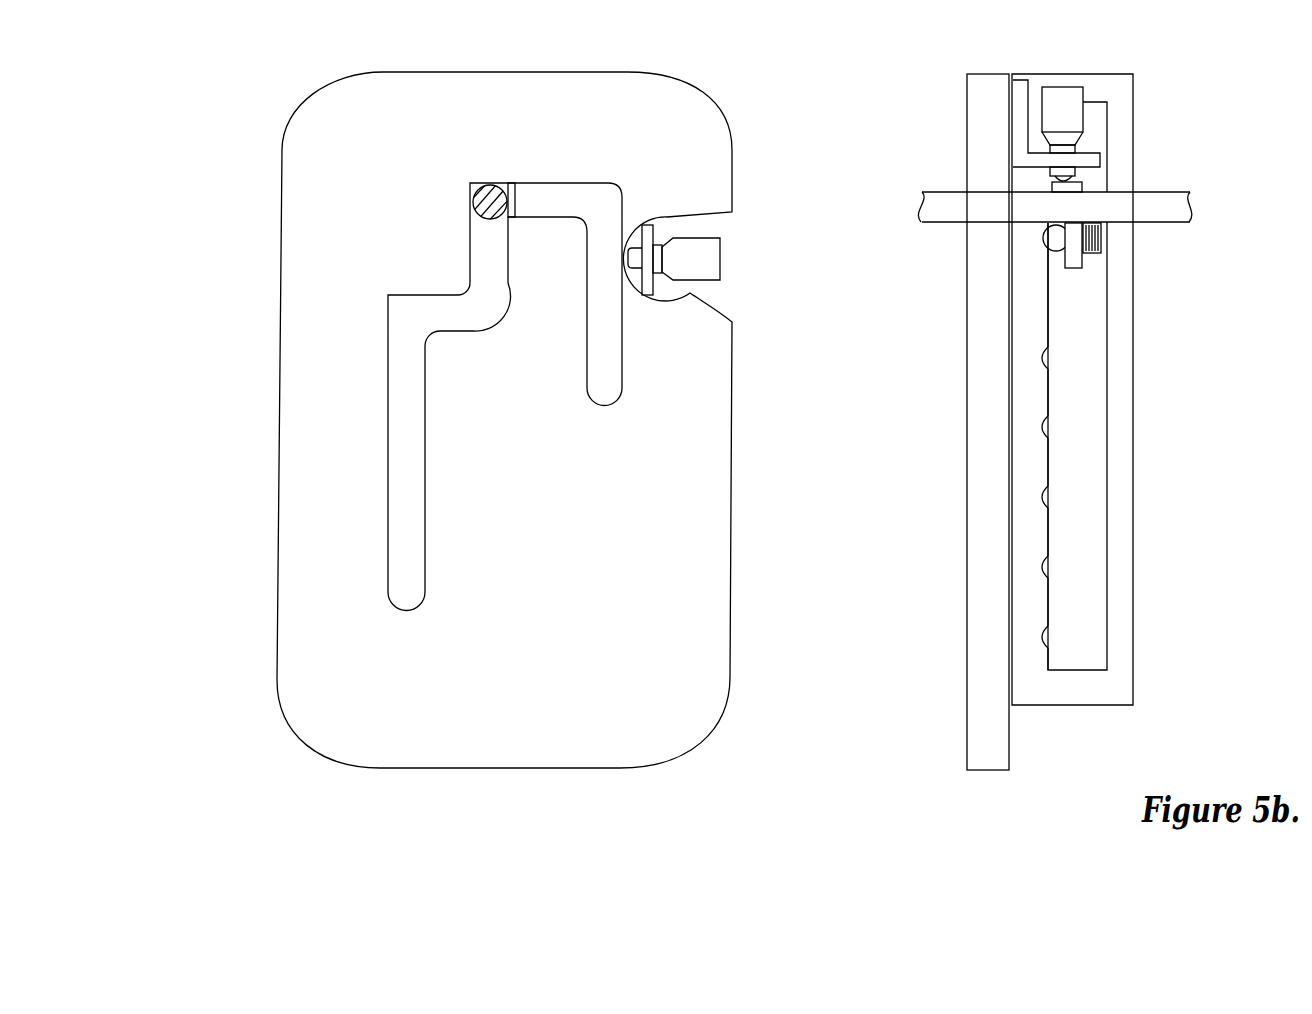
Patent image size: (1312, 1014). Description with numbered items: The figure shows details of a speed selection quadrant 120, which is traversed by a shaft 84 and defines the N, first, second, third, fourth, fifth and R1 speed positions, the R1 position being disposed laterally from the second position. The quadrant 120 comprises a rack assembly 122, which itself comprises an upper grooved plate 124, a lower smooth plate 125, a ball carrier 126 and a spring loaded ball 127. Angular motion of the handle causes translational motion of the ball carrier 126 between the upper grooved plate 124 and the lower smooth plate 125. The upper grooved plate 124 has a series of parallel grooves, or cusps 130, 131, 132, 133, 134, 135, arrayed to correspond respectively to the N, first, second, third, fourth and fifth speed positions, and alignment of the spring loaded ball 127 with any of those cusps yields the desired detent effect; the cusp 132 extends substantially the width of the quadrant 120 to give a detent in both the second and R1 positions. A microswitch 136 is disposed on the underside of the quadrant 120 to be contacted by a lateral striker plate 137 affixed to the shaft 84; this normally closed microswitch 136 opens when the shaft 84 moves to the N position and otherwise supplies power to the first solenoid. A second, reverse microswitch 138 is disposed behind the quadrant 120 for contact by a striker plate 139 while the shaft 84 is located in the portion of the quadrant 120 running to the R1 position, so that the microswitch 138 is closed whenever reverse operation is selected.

The speed selection quadrant 120 is at (322, 656).
The shaft 84 is at (470, 218).
The striker plate 139 is at (522, 188).
The reverse microswitch 138 is at (724, 265).
The rack assembly 122 is at (1133, 696).
The lower smooth plate 125 is at (1118, 600).
The upper grooved plate 124 is at (1031, 393).
The cusp 131 is at (1041, 358).
The cusp 132 is at (1041, 428).
The cusp 133 is at (1041, 497).
The cusp 134 is at (1041, 568).
The cusp 135 is at (1041, 637).
The microswitch 136 is at (1091, 115).
The lateral striker plate 137 is at (1088, 186).
The cusp 130 is at (1033, 238).
The spring loaded ball 127 is at (1082, 272).
The ball carrier 126 is at (1095, 259).